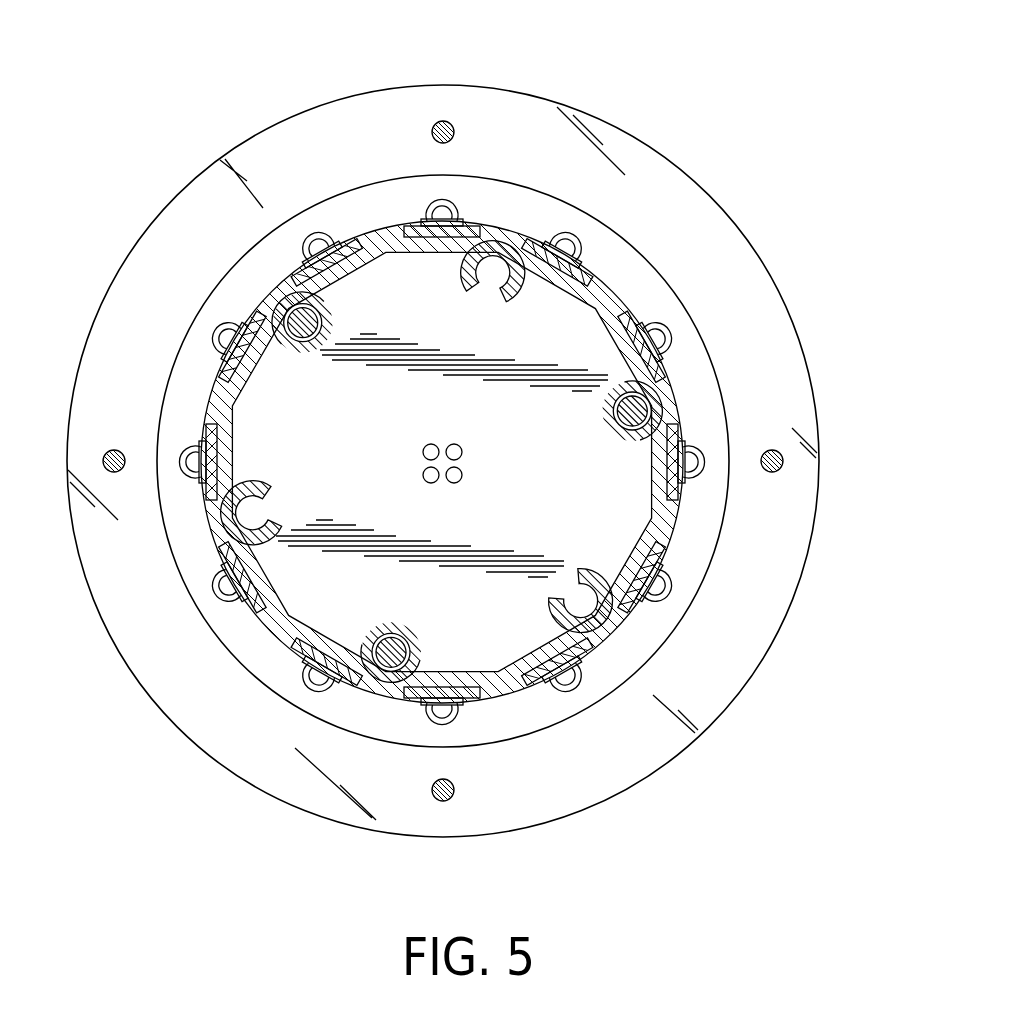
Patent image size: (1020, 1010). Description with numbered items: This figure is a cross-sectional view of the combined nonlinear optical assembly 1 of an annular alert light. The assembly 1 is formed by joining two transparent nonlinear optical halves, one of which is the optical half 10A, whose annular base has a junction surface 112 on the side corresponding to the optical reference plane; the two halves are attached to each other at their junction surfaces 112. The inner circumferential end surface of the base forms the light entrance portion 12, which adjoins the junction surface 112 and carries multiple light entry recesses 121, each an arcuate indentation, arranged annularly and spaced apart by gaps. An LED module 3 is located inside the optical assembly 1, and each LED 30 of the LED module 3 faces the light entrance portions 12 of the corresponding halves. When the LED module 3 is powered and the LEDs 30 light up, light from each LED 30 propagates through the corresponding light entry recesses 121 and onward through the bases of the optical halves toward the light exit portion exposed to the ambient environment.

The nonlinear optical assembly 1 is at (681, 102).
The nonlinear optical half 10A is at (558, 90).
The junction surface 112 is at (270, 163).
The light entrance portion 12 is at (418, 217).
The light entry recess 121 is at (452, 208).
The LED module 3 is at (465, 202).
The LED 30 is at (443, 218).